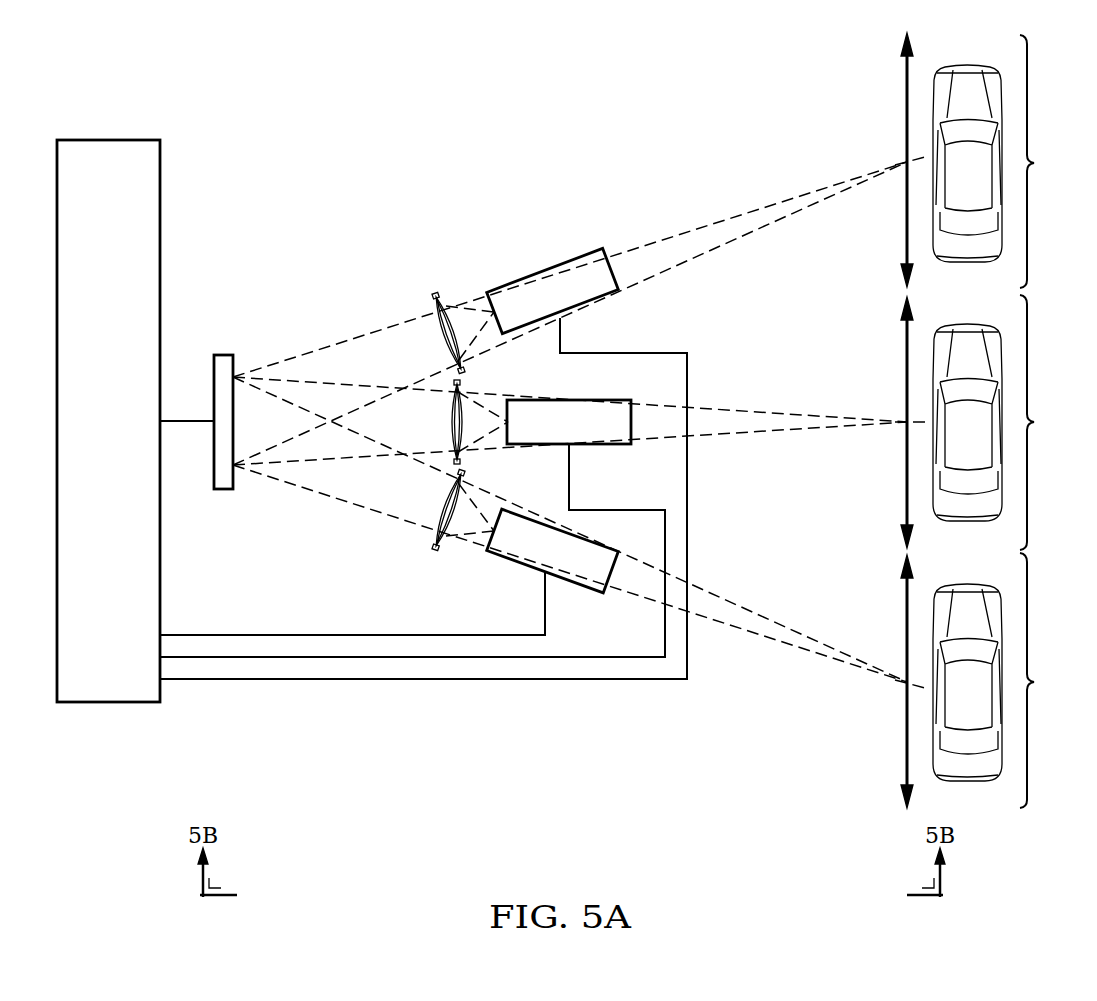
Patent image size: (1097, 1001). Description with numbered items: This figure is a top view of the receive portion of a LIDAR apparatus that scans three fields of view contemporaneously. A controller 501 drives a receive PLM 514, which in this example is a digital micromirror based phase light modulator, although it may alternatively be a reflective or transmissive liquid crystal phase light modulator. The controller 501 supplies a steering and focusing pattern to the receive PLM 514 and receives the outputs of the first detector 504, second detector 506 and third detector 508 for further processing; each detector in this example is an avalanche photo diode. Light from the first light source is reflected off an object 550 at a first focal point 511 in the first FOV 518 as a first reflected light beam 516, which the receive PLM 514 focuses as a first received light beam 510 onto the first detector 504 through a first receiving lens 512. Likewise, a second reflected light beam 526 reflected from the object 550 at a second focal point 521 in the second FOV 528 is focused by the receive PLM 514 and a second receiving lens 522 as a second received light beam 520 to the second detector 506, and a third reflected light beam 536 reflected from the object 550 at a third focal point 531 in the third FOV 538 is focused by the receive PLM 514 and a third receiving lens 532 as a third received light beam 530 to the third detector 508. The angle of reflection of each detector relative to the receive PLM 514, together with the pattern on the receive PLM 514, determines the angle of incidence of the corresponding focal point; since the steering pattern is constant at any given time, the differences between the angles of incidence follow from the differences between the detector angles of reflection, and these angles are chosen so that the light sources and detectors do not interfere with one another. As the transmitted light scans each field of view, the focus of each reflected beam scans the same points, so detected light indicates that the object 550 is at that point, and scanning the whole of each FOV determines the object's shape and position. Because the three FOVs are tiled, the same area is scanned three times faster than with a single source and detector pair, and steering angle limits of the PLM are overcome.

The controller 501 is at (86, 436).
The receive PLM 514 is at (225, 353).
The first received light beam 510 is at (333, 338).
The first receiving lens 512 is at (435, 294).
The first detector 504 is at (540, 273).
The second receiving lens 522 is at (463, 386).
The second received light beam 520 is at (377, 457).
The second detector 506 is at (608, 447).
The third detector 508 is at (517, 563).
The third received light beam 530 is at (375, 517).
The third receiving lens 532 is at (435, 552).
The third focal point 531 is at (902, 157).
The third reflected light beam 536 is at (810, 208).
The second reflected light beam 526 is at (778, 410).
The second focal point 521 is at (902, 428).
The first reflected light beam 516 is at (775, 620).
The first focal point 511 is at (902, 683).
The third FOV 538 is at (992, 160).
The second FOV 528 is at (992, 422).
The first FOV 518 is at (992, 680).
The object 550 is at (972, 63).